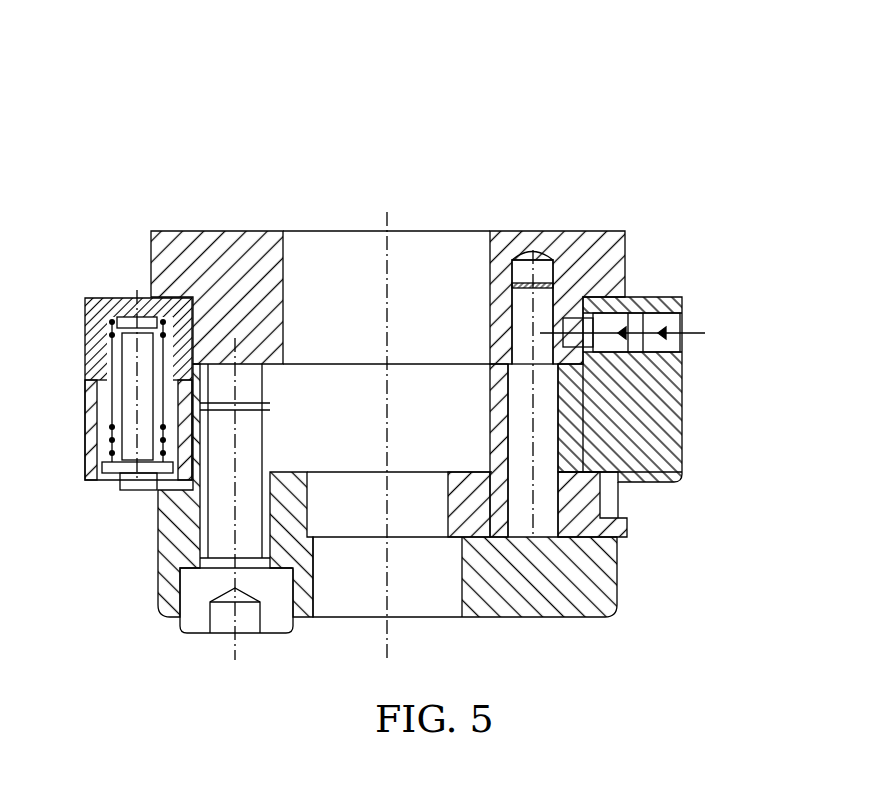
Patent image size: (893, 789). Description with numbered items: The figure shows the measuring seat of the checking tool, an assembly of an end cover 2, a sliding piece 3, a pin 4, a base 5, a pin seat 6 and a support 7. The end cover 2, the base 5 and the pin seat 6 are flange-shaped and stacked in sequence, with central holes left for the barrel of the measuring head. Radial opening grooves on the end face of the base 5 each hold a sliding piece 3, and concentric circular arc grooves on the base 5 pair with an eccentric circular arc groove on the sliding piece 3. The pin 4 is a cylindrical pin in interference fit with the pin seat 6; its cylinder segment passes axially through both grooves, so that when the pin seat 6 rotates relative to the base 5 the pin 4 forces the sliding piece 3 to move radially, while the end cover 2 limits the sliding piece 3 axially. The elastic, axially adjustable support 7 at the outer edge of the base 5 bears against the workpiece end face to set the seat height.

The end cover 2 is at (838, 418).
The sliding piece 3 is at (794, 300).
The pin 4 is at (727, 82).
The base 5 is at (793, 183).
The pin seat 6 is at (340, 58).
The support 7 is at (43, 103).